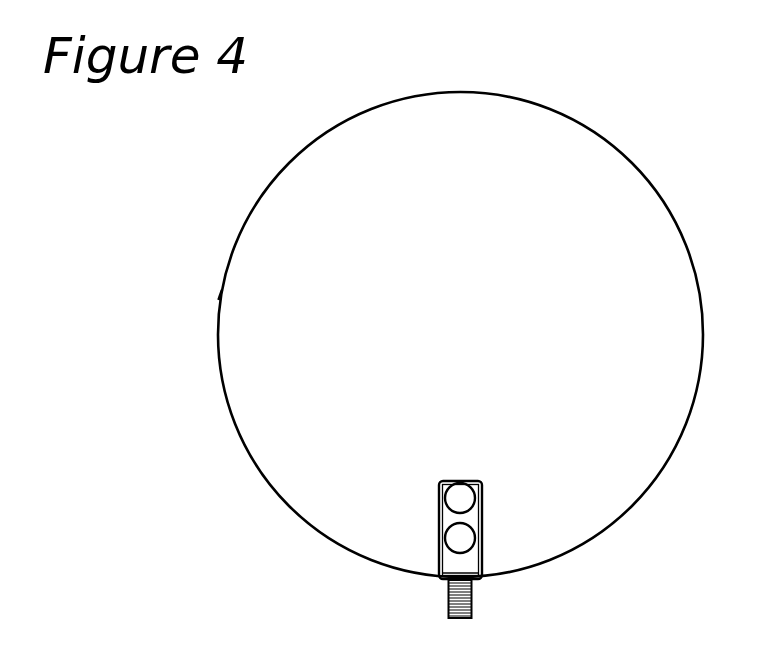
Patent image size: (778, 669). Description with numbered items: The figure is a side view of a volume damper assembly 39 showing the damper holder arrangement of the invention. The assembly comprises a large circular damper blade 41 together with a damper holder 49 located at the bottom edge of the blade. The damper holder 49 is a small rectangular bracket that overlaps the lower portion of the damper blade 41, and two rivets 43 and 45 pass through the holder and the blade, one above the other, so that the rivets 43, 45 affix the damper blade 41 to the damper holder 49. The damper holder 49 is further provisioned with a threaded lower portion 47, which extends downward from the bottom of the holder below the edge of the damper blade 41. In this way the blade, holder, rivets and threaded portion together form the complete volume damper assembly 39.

The volume damper assembly 39 is at (625, 138).
The damper blade 41 is at (245, 288).
The rivet 43 is at (463, 497).
The rivet 45 is at (457, 538).
The threaded lower portion 47 is at (447, 607).
The damper holder 49 is at (472, 563).